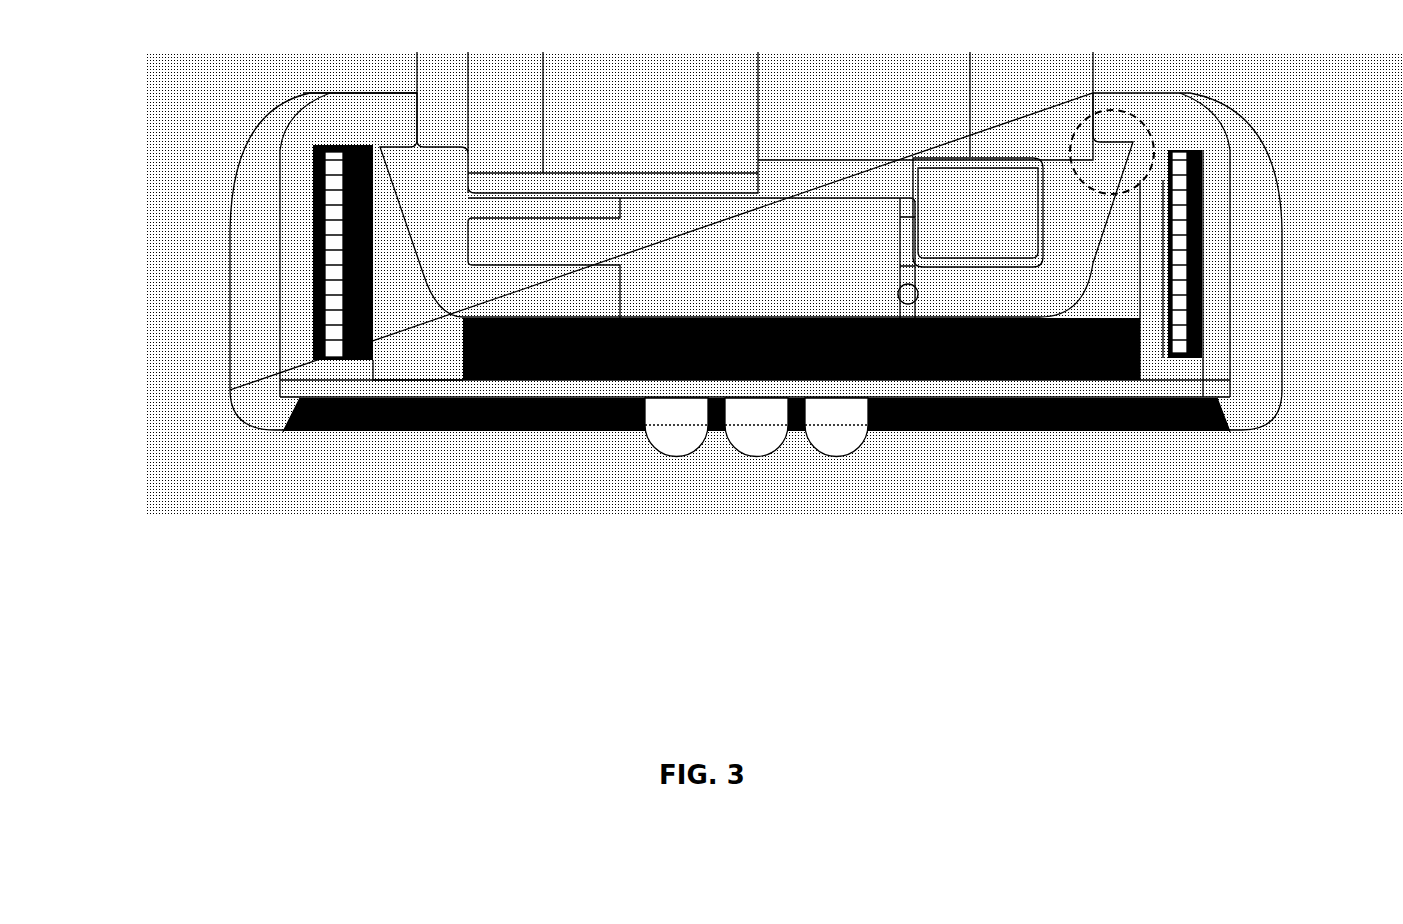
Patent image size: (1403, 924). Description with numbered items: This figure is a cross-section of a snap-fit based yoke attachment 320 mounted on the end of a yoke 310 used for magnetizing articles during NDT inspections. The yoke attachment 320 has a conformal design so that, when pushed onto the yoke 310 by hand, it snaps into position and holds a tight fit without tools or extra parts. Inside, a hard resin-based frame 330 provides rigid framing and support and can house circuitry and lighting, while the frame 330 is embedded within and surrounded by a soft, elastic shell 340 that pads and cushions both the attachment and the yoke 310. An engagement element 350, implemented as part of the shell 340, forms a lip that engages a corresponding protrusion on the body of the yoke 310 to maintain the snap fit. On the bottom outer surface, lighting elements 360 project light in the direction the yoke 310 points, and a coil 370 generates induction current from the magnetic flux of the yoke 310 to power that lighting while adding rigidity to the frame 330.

The yoke 310 is at (755, 185).
The yoke attachment 320 is at (223, 237).
The frame 330 is at (1210, 348).
The shell 340 is at (1145, 226).
The engagement element 350 is at (1150, 130).
The lighting elements 360 is at (697, 460).
The coil 370 is at (1182, 275).